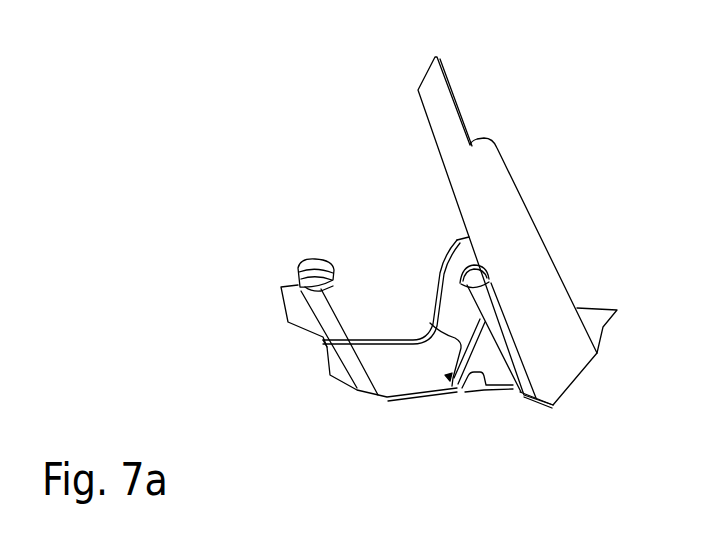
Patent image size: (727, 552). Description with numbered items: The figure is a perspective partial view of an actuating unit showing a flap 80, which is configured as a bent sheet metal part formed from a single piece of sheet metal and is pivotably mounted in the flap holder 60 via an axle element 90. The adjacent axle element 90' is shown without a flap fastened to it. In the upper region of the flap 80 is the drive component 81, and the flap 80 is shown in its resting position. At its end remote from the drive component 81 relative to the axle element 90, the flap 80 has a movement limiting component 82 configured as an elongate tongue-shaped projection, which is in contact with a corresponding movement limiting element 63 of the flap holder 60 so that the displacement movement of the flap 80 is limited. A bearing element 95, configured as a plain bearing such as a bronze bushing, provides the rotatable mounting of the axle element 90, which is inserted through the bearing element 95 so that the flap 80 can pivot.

The flap 80 is at (367, 87).
The drive component 81 is at (470, 187).
The movement limiting component 82 is at (466, 366).
The movement limiting element 63 is at (487, 403).
The axle element 90 is at (387, 264).
The adjacent axle element 90' is at (251, 283).
The bearing element 95 is at (296, 285).
The flap holder 60 is at (413, 368).